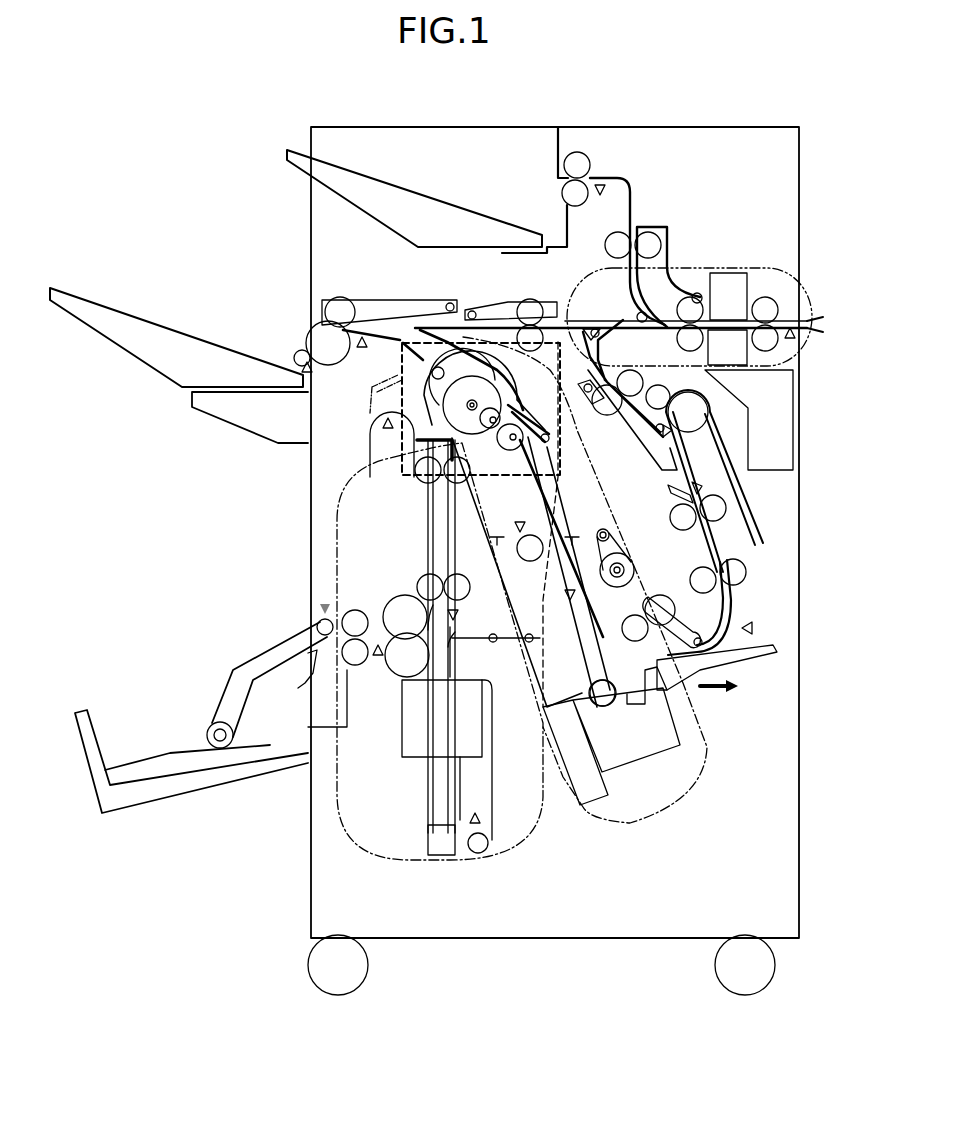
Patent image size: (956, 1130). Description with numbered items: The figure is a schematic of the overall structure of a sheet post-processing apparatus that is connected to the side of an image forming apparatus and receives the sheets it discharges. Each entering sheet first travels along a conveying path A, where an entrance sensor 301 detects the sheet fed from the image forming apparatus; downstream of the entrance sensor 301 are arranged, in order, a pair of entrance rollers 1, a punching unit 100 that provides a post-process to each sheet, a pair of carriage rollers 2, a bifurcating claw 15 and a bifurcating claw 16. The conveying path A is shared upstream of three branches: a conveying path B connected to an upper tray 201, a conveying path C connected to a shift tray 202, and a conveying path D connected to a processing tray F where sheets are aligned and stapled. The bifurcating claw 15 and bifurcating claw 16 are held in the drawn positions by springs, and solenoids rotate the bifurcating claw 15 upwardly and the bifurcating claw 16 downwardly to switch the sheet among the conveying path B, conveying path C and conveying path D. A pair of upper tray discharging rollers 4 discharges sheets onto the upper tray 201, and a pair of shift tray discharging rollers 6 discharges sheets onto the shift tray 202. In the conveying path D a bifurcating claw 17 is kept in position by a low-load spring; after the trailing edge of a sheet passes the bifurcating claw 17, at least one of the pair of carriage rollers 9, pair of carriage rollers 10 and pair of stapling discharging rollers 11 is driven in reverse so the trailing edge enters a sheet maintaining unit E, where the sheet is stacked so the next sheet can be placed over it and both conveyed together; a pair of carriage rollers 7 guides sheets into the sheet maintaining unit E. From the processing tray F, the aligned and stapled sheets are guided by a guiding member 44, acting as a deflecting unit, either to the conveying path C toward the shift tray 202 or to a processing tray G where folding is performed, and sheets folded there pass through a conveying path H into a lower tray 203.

The pair of entrance rollers 1 is at (767, 303).
The pair of carriage rollers 2 is at (692, 303).
The pair of upper tray discharging rollers 4 is at (579, 158).
The pair of shift tray discharging rollers 6 is at (320, 298).
The pair of carriage rollers 7 is at (630, 376).
The pair of carriage rollers 9 is at (716, 512).
The pair of carriage rollers 10 is at (742, 578).
The pair of stapling discharging rollers 11 is at (658, 606).
The bifurcating claw 15 is at (628, 300).
The bifurcating claw 16 is at (600, 322).
The bifurcating claw 17 is at (660, 437).
The guiding member 44 is at (445, 375).
The punching unit 100 is at (728, 290).
The upper tray 201 is at (428, 198).
The shift tray 202 is at (225, 352).
The lower tray 203 is at (187, 797).
The entrance sensor 301 is at (798, 347).
The conveying path A is at (680, 268).
The conveying path B is at (642, 222).
The conveying path C is at (448, 326).
The conveying path D is at (730, 597).
The sheet maintaining unit E is at (757, 542).
The processing tray F is at (657, 820).
The processing tray G is at (445, 862).
The conveying path H is at (381, 635).